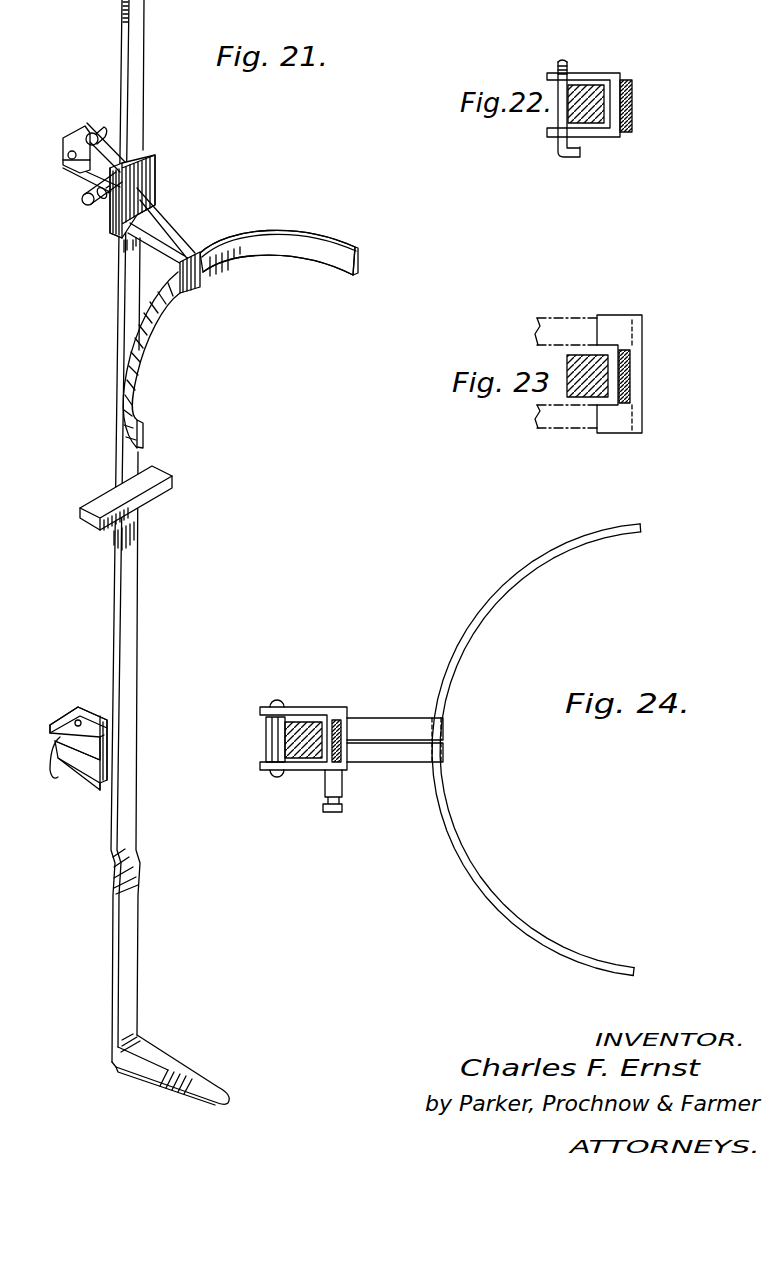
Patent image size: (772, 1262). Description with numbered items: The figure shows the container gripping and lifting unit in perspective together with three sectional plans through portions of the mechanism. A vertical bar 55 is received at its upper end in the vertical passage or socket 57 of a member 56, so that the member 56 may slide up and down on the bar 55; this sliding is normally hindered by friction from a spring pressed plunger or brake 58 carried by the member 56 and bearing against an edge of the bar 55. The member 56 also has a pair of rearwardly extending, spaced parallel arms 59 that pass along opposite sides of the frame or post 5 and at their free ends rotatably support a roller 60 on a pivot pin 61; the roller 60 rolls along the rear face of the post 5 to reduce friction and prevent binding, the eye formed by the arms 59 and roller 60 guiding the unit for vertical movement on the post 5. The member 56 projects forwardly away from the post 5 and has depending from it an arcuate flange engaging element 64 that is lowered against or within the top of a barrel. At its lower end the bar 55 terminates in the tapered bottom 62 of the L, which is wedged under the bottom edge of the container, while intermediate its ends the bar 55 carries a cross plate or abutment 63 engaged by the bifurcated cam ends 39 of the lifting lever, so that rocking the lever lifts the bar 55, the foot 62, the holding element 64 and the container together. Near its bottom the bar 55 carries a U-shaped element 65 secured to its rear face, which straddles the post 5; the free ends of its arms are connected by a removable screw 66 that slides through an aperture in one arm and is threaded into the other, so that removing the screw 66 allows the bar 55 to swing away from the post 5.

In FIG. 22, the frame or post 5 is at (597, 112).
In FIG. 23, the frame or post 5 is at (598, 382).
In FIG. 24, the frame or post 5 is at (305, 758).
In FIG. 23, the bifurcated cam ends 39 is at (587, 316).
In FIG. 21, the bar 55 is at (128, 573).
In FIG. 22, the bar 55 is at (636, 106).
In FIG. 23, the bar 55 is at (630, 365).
In FIG. 24, the bar 55 is at (342, 730).
In FIG. 21, the member or element 56 is at (158, 183).
In FIG. 24, the member or element 56 is at (303, 738).
In FIG. 21, the vertical passage or socket 57 is at (147, 150).
In FIG. 24, the vertical passage or socket 57 is at (347, 760).
In FIG. 21, the spring pressed plunger or brake 58 is at (84, 203).
In FIG. 24, the spring pressed plunger or brake 58 is at (332, 813).
In FIG. 21, the rearwardly extending arms 59 is at (90, 132).
In FIG. 24, the rearwardly extending arms 59 is at (309, 740).
In FIG. 21, the roller 60 is at (81, 160).
In FIG. 24, the roller 60 is at (266, 740).
In FIG. 21, the pivot pin 61 is at (65, 155).
In FIG. 24, the pivot pin 61 is at (272, 775).
In FIG. 21, the bottom of the L or base arm 62 is at (167, 1057).
In FIG. 21, the cross plate or abutment 63 is at (165, 494).
In FIG. 23, the cross plate or abutment 63 is at (642, 328).
In FIG. 21, the arcuate flange engaging element 64 is at (280, 252).
In FIG. 24, the arcuate flange engaging element 64 is at (520, 573).
In FIG. 21, the U-shaped element 65 is at (92, 760).
In FIG. 22, the U-shaped element 65 is at (603, 75).
In FIG. 21, the removable screw 66 is at (74, 720).
In FIG. 22, the removable screw 66 is at (556, 145).